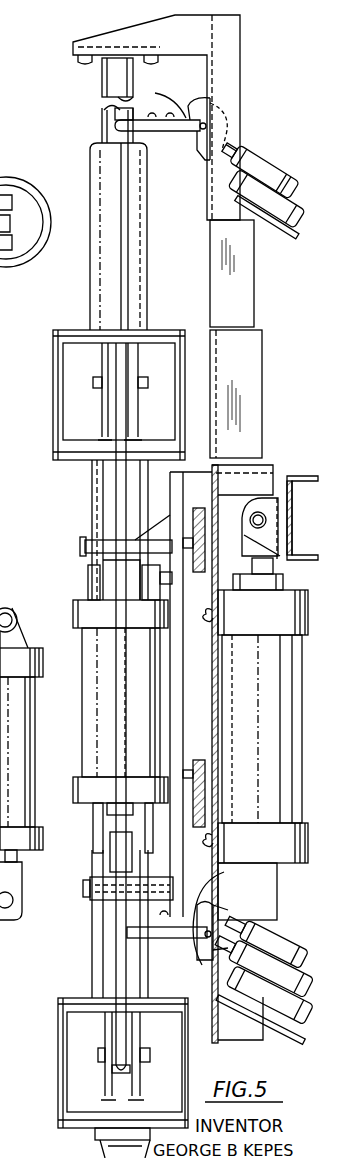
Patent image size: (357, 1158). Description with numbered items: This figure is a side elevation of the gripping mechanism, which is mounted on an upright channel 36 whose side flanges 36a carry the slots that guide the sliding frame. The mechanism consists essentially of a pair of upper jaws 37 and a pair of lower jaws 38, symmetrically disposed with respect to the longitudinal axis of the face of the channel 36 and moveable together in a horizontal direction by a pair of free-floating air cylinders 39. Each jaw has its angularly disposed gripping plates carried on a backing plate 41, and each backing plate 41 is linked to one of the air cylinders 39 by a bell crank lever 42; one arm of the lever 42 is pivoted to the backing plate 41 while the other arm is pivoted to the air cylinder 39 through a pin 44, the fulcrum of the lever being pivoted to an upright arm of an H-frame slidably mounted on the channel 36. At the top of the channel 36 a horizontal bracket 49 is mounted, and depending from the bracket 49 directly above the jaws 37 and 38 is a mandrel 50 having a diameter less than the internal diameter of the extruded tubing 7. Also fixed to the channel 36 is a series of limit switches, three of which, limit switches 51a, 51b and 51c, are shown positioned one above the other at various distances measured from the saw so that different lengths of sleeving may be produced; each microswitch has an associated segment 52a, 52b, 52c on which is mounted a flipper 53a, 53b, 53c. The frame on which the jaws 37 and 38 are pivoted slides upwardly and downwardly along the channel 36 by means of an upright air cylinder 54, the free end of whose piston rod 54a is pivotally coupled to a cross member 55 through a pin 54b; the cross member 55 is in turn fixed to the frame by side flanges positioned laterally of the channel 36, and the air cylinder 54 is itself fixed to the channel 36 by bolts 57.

The extruded tubing 7 is at (108, 240).
The upright channel 36 is at (265, 316).
The side flanges of channel 36a is at (255, 405).
The upper jaws 37 is at (86, 319).
The lower jaws 38 is at (49, 1052).
The air cylinders 39 is at (105, 730).
The backing plate 41 is at (158, 355).
The bell crank lever 42 is at (130, 1072).
The pin 44 is at (15, 620).
The horizontal bracket 49 is at (197, 33).
The mandrel 50 is at (112, 80).
The limit switch 51a is at (300, 155).
The limit switch 51b is at (282, 928).
The limit switch 51c is at (290, 1030).
The segment 52a is at (205, 96).
The segment 52b is at (225, 872).
The segment 52c is at (188, 930).
The flipper 53a is at (175, 132).
The flipper 53b is at (90, 880).
The flipper 53c is at (165, 910).
The upright air cylinder 54 is at (243, 667).
The piston rod 54a is at (273, 548).
The pin 54b is at (262, 512).
The cross member 55 is at (310, 497).
The bolts 57 is at (212, 614).